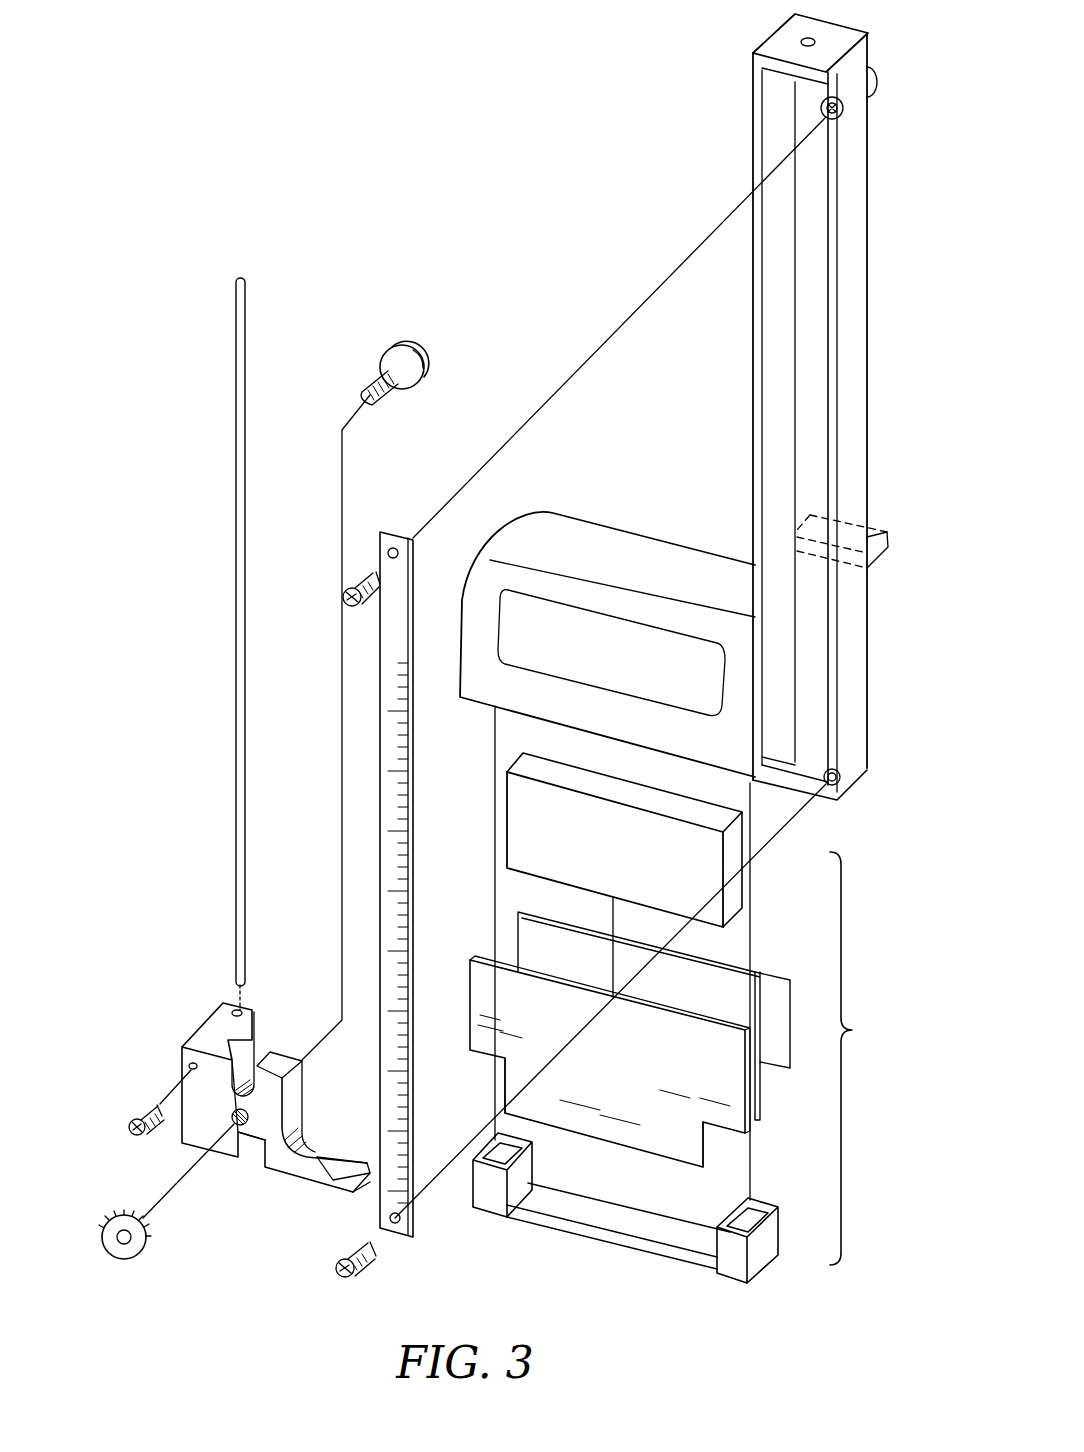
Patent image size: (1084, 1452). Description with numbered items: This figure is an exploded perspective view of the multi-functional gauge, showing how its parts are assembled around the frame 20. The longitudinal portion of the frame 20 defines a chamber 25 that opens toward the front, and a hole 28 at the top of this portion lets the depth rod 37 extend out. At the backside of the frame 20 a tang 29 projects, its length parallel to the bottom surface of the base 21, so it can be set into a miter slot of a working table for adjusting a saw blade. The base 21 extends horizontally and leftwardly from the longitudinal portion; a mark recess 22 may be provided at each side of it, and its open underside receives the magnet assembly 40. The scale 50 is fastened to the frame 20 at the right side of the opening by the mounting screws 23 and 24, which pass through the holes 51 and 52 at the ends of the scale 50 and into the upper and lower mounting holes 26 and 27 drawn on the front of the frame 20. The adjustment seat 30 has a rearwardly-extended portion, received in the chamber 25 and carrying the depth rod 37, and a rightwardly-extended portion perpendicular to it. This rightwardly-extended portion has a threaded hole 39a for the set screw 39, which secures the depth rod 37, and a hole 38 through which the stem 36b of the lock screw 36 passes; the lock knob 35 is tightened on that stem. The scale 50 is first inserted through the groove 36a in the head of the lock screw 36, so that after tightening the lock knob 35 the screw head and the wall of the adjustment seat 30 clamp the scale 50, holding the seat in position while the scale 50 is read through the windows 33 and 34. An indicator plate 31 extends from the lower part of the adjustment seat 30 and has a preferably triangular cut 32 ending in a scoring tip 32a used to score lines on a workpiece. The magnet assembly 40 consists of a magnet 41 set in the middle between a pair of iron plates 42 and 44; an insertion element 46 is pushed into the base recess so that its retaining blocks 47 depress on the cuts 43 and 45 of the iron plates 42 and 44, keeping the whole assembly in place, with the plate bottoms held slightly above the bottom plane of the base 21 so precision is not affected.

The frame 20 is at (751, 364).
The base 21 is at (612, 535).
The mark recess 22 is at (520, 650).
The mounting screw 23 is at (351, 578).
The mounting screw 24 is at (362, 1258).
The chamber 25 is at (776, 100).
The upper hole 26 is at (834, 116).
The lower hole 27 is at (834, 784).
The hole 28 is at (806, 42).
The tang 29 is at (880, 540).
The adjustment seat 30 is at (205, 1016).
The indicator plate 31 is at (328, 1150).
The cut 32 is at (330, 1177).
The scoring tip 32a is at (355, 1192).
The window 33 is at (253, 1152).
The window 34 is at (258, 1048).
The lock knob 35 is at (146, 1236).
The lock screw 36 is at (388, 348).
The groove 36a is at (415, 348).
The stem 36b is at (365, 396).
The depth rod 37 is at (236, 322).
The hole 38 is at (200, 1148).
The set screw 39 is at (138, 1118).
The threaded hole 39a is at (190, 1064).
The magnet assembly 40 is at (695, 985).
The magnet 41 is at (735, 905).
The iron plate 42 is at (530, 910).
The cut 43 is at (762, 1072).
The iron plate 44 is at (515, 960).
The cut 45 is at (494, 1063).
The insertion element 46 is at (631, 1244).
The retaining block 47 is at (525, 1170).
The scale 50 is at (378, 745).
The upper hole 51 is at (391, 547).
The lower hole 52 is at (400, 1222).